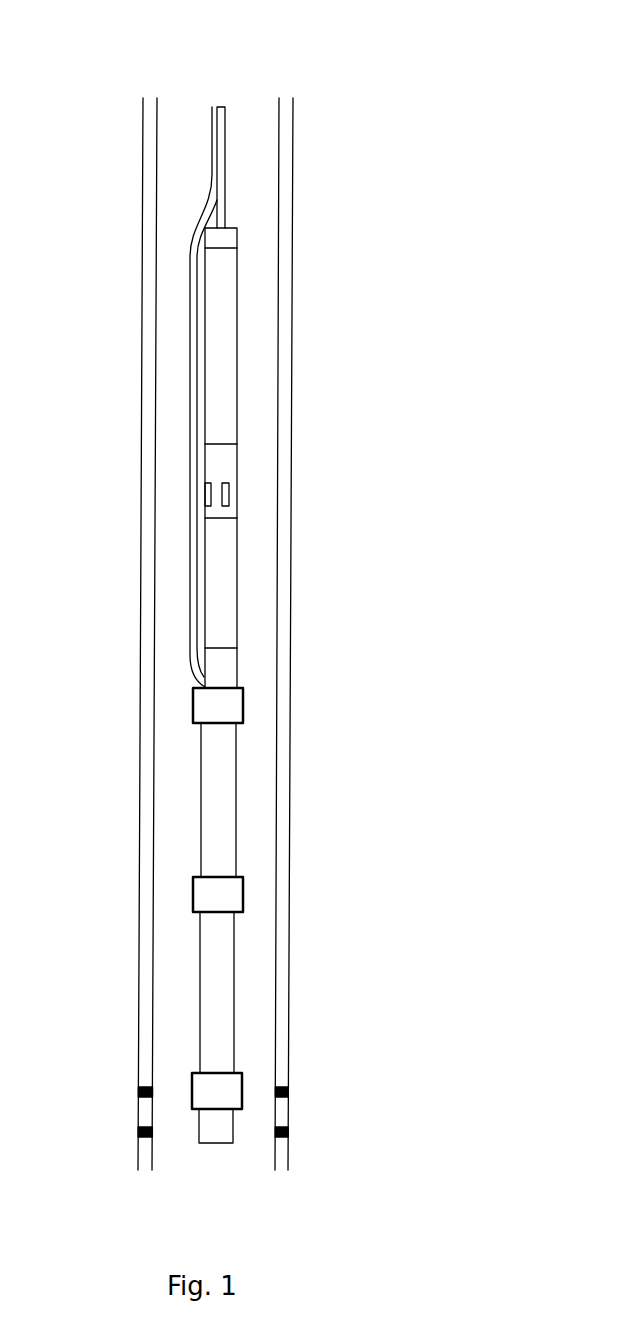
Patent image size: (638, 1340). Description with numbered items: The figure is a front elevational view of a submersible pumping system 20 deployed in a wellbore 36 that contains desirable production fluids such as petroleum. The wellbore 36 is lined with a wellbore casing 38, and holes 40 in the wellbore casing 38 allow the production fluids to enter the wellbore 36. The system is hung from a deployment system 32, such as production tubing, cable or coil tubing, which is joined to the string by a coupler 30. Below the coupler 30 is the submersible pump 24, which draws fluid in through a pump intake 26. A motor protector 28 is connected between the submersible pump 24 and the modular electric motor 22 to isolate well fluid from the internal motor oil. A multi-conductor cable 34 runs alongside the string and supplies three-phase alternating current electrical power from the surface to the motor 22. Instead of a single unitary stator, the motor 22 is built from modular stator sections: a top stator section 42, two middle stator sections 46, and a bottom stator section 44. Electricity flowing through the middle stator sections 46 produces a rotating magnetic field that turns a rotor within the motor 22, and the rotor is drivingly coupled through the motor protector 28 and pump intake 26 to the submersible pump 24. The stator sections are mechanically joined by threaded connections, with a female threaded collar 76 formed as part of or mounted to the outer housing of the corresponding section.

The submersible pumping system 20 is at (252, 115).
The modular electric motor 22 is at (294, 898).
The submersible pump 24 is at (300, 447).
The pump intake 26 is at (237, 470).
The motor protector 28 is at (235, 585).
The coupler 30 is at (227, 237).
The deployment system 32 is at (226, 199).
The multi-conductor cable 34 is at (193, 298).
The wellbore 36 is at (258, 990).
The wellbore casing 38 is at (147, 963).
The holes 40 is at (138, 1092).
The top stator section 42 is at (227, 675).
The bottom stator section 44 is at (220, 1126).
The middle stator sections 46 is at (230, 803).
The female threaded collar 76 is at (198, 702).